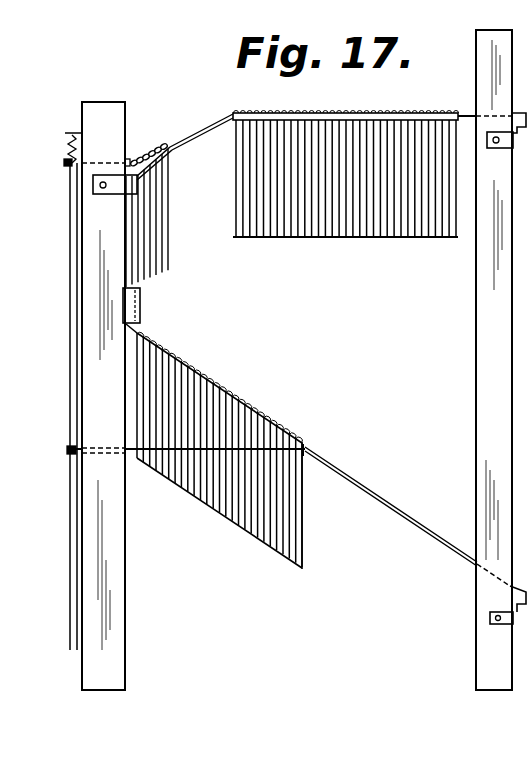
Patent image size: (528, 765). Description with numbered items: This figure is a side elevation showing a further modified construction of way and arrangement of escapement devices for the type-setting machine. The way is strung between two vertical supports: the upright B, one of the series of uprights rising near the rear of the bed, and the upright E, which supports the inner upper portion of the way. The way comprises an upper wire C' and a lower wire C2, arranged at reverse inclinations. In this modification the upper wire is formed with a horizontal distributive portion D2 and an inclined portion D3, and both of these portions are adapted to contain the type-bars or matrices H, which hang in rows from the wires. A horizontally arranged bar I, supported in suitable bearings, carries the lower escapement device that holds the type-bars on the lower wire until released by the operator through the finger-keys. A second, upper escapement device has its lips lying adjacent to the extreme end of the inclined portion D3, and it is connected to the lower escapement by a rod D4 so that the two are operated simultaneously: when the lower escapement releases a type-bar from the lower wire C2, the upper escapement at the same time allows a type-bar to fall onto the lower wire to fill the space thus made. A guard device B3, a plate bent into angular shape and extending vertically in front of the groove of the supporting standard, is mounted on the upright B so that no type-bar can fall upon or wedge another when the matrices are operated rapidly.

The upright B is at (92, 378).
The upright E is at (480, 330).
The rod D4 is at (70, 322).
The inclined portion D3 is at (155, 131).
The upper wire C' is at (212, 141).
The horizontal distributive portion D2 is at (362, 113).
The type-bar H is at (323, 238).
The guard device B3 is at (142, 311).
The bar I is at (90, 447).
The lower wire C2 is at (415, 531).